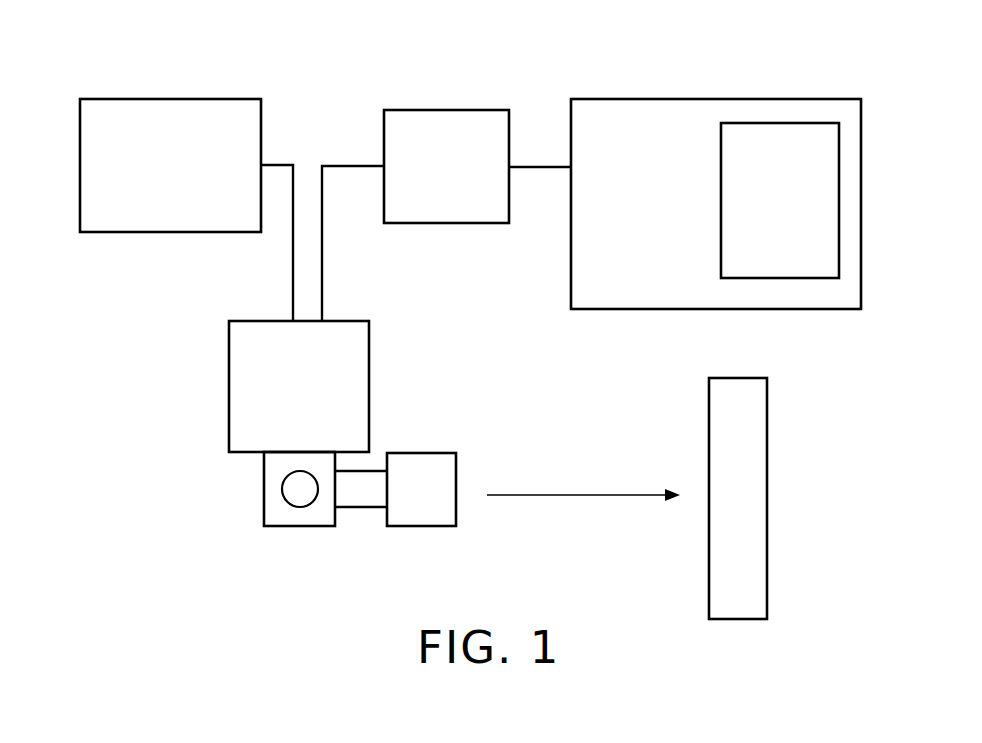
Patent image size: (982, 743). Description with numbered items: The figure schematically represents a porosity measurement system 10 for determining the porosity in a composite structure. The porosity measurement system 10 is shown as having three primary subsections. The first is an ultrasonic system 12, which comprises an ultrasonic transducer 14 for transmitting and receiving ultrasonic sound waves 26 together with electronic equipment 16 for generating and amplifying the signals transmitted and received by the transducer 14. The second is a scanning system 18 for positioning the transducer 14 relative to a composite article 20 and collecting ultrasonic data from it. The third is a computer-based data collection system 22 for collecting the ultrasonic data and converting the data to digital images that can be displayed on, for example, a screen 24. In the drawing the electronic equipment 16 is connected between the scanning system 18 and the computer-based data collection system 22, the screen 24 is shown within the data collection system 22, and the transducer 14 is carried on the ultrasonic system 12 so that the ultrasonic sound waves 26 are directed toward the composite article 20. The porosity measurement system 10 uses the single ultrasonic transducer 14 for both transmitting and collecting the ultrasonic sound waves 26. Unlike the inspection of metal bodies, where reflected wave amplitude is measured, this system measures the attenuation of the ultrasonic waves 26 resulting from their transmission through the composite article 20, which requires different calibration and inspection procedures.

The porosity measurement system 10 is at (172, 597).
The ultrasonic system 12 is at (440, 305).
The ultrasonic transducer 14 is at (422, 517).
The electronic equipment 16 is at (420, 108).
The scanning system 18 is at (80, 232).
The composite article 20 is at (766, 436).
The computer-based data collection system 22 is at (610, 97).
The screen 24 is at (832, 205).
The ultrasonic sound waves 26 is at (603, 493).